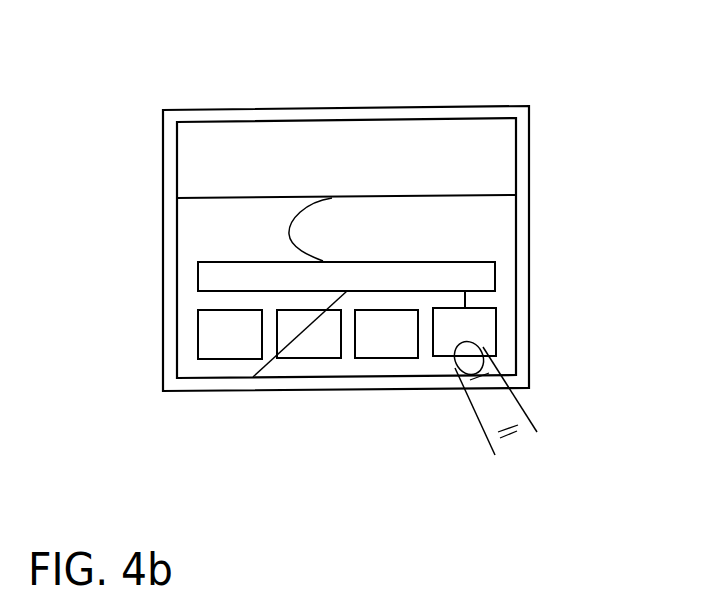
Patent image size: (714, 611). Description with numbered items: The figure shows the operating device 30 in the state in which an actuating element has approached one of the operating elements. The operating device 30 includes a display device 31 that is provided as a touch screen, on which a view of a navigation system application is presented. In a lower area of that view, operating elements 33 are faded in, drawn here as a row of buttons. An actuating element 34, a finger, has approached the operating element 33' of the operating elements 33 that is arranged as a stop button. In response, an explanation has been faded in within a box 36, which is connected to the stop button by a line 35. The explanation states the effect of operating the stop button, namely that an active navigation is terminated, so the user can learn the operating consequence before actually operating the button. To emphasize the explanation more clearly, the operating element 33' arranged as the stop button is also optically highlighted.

The operating device 30 is at (475, 108).
The display device 31 is at (278, 122).
The operating elements 33 is at (308, 393).
The operating element arranged as a stop button 33' is at (525, 337).
The actuating element 34 is at (476, 391).
The line 35 is at (467, 296).
The box 36 is at (487, 273).